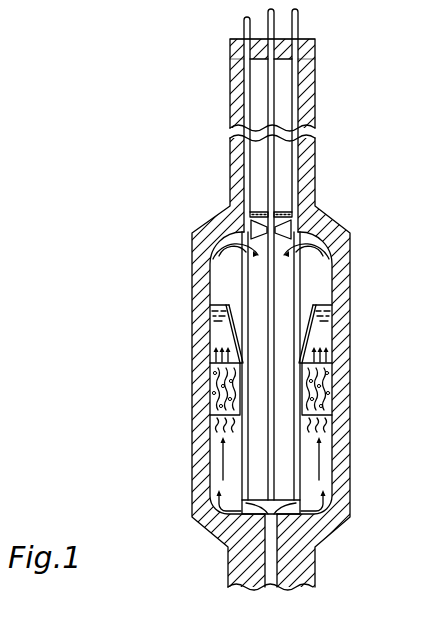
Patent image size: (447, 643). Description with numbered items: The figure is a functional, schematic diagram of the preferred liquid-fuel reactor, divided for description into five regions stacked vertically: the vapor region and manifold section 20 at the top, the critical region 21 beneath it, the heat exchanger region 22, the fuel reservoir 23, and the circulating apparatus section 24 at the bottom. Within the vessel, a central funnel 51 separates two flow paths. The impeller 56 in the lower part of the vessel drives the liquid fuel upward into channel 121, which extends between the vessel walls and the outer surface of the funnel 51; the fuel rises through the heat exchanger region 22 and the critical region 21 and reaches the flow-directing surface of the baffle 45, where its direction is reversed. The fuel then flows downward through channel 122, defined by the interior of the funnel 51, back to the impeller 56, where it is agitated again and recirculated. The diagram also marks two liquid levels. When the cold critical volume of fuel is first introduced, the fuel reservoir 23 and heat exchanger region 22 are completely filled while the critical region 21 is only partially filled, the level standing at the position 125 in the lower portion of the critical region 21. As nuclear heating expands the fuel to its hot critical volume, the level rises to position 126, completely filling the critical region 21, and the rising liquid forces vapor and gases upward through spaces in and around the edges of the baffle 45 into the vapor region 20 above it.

The vapor region and manifold section 20 is at (362, 233).
The critical region 21 is at (362, 236).
The heat exchanger region 22 is at (362, 362).
The fuel reservoir 23 is at (362, 418).
The circulating apparatus section 24 is at (362, 523).
The baffle 45 is at (238, 244).
The funnel 51 is at (232, 333).
The impeller 56 is at (262, 510).
The channel 121 is at (217, 480).
The channel 122 is at (252, 428).
The cold critical fuel level 125 is at (221, 305).
The hot critical fuel level 126 is at (256, 212).